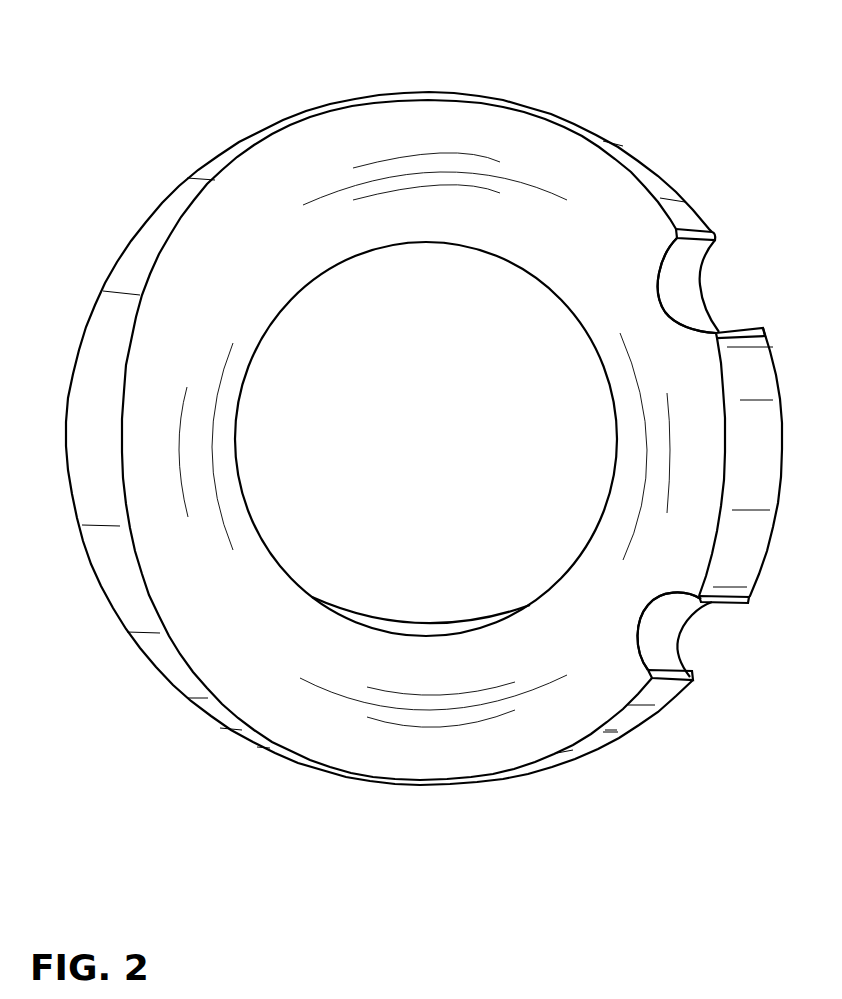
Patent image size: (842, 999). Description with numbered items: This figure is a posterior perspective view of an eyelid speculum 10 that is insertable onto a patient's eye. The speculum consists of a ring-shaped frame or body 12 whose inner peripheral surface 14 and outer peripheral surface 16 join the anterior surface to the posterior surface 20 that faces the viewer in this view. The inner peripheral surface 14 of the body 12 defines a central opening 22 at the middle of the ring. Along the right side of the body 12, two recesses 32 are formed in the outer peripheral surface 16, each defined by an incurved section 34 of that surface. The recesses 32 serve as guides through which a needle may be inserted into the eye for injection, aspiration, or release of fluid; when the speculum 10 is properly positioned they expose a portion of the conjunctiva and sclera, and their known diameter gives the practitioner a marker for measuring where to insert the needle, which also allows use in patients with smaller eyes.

The eyelid speculum 10 is at (45, 48).
The body 12 is at (103, 280).
The inner peripheral surface 14 is at (437, 630).
The outer peripheral surface 16 is at (102, 498).
The posterior surface 20 is at (193, 598).
The central opening 22 is at (366, 367).
The recesses 32 is at (725, 315).
The incurved section 34 is at (685, 300).